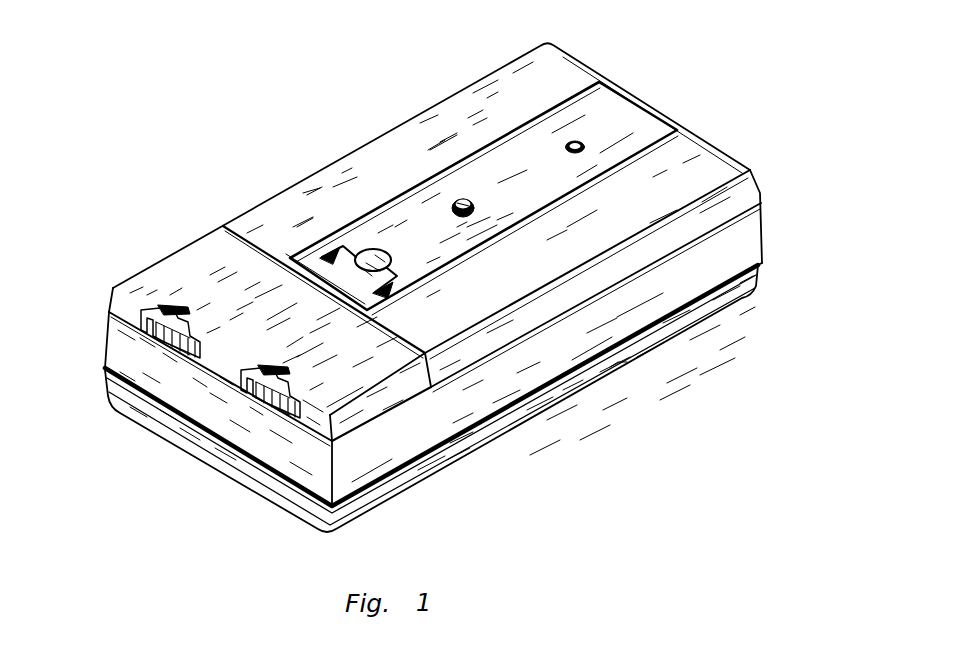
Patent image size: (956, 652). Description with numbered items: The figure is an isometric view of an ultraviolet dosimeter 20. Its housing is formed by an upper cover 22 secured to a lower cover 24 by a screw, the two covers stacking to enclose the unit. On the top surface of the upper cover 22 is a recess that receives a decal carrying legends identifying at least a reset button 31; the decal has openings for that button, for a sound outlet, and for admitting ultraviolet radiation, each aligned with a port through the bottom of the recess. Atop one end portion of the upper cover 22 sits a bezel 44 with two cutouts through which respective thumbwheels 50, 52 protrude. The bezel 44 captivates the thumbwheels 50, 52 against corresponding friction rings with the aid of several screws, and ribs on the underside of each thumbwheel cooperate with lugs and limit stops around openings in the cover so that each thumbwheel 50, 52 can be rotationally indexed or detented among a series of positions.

The ultraviolet dosimeter 20 is at (432, 277).
The upper cover 22 is at (747, 190).
The lower cover 24 is at (427, 476).
The reset button 31 is at (455, 201).
The bezel 44 is at (170, 275).
The thumbwheel 50 is at (155, 347).
The thumbwheel 52 is at (252, 402).